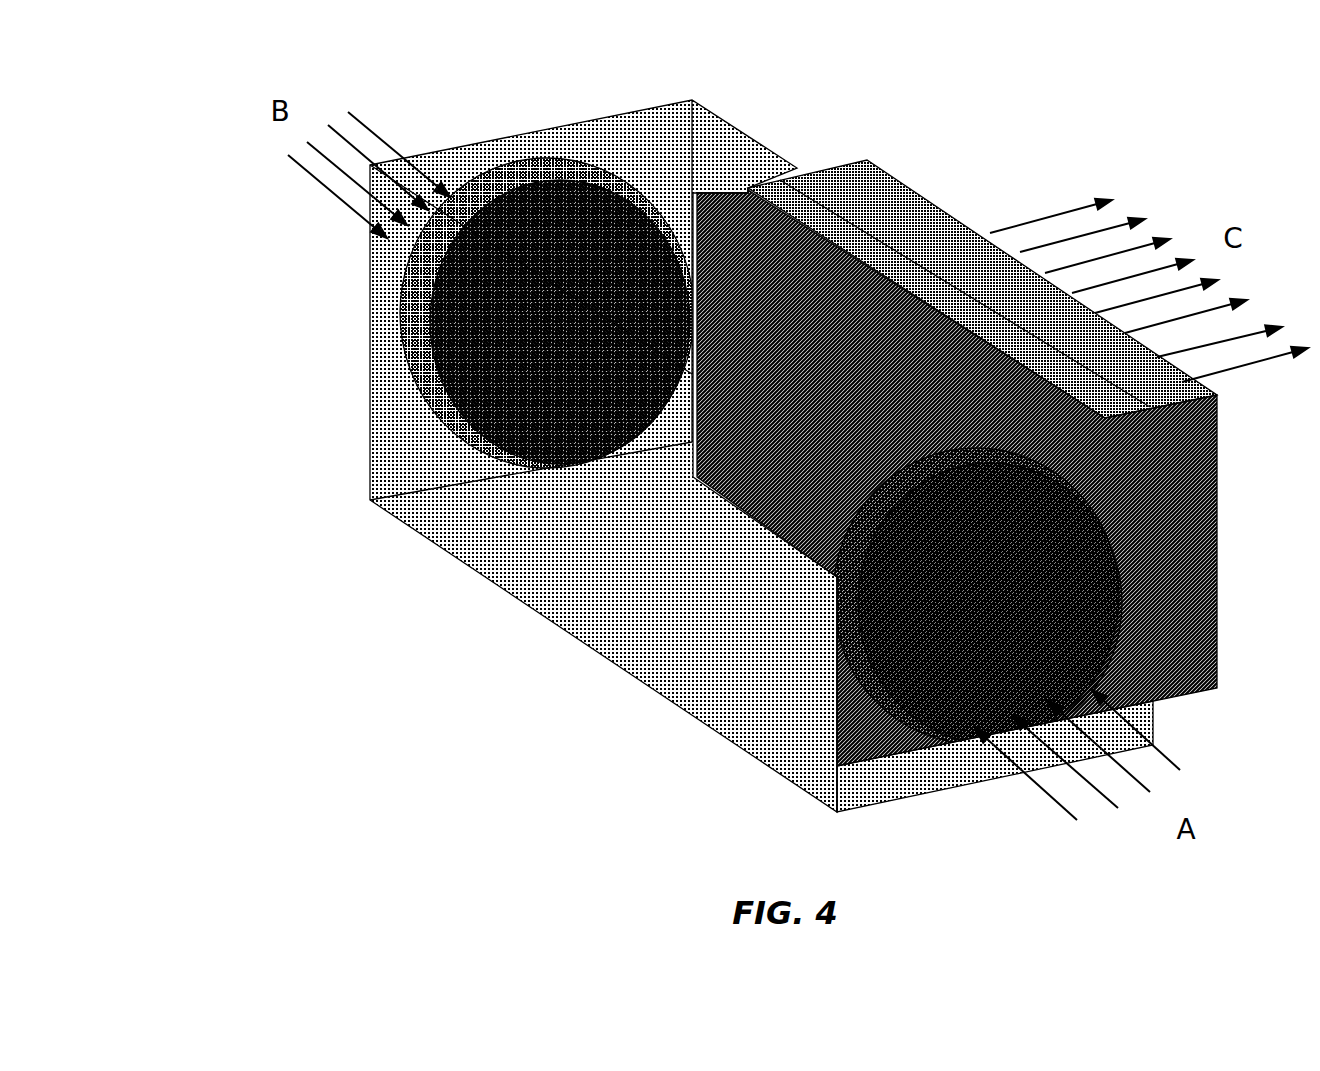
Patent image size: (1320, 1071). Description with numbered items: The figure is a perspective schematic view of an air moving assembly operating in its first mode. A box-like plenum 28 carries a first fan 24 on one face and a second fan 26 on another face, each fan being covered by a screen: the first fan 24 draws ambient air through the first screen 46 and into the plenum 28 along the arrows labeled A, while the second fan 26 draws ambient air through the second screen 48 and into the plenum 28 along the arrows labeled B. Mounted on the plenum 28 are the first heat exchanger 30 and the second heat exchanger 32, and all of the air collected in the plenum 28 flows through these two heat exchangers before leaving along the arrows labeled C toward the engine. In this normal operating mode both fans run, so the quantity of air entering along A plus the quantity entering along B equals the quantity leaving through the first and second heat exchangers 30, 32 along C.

The first fan 24 is at (848, 650).
The second fan 26 is at (432, 398).
The plenum 28 is at (632, 638).
The first heat exchanger 30 is at (731, 195).
The second heat exchanger 32 is at (870, 178).
The first screen 46 is at (938, 722).
The second screen 48 is at (398, 340).